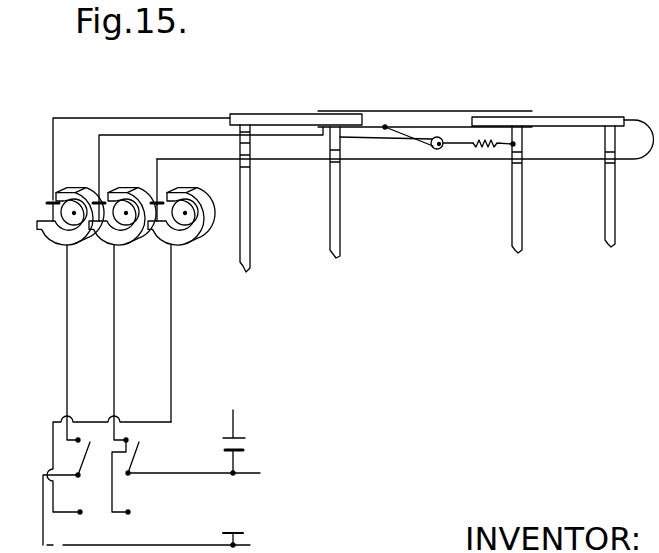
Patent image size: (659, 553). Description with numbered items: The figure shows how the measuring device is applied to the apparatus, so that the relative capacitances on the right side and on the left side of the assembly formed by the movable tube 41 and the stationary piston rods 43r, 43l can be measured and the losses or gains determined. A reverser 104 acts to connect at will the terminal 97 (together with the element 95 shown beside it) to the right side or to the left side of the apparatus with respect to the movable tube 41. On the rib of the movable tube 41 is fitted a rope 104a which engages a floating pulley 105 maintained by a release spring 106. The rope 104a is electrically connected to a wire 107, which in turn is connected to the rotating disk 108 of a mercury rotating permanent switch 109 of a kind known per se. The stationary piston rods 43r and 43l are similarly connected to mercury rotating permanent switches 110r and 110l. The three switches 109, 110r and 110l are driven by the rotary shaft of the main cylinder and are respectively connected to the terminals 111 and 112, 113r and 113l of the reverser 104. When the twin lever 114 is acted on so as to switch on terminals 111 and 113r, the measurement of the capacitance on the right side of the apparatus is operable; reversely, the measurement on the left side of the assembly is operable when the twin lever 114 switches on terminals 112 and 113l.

The movable tube 41 is at (434, 110).
The left stationary piston rod 43l is at (267, 117).
The right stationary piston rod 43r is at (573, 116).
The battery 95 is at (247, 440).
The terminal 97 is at (245, 546).
The reverser 104 is at (63, 466).
The rope 104a is at (422, 146).
The floating pulley 105 is at (441, 148).
The release spring 106 is at (490, 140).
The wire 107 is at (203, 135).
The rotating disk 108 is at (122, 193).
The mercury rotating permanent switch 109 is at (100, 242).
The left mercury rotating permanent switch 110l is at (47, 235).
The right mercury rotating permanent switch 110r is at (195, 237).
The terminal 111 is at (128, 439).
The terminal 112 is at (128, 514).
The left terminal 113l is at (78, 438).
The right terminal 113r is at (80, 514).
The twin lever 114 is at (128, 460).